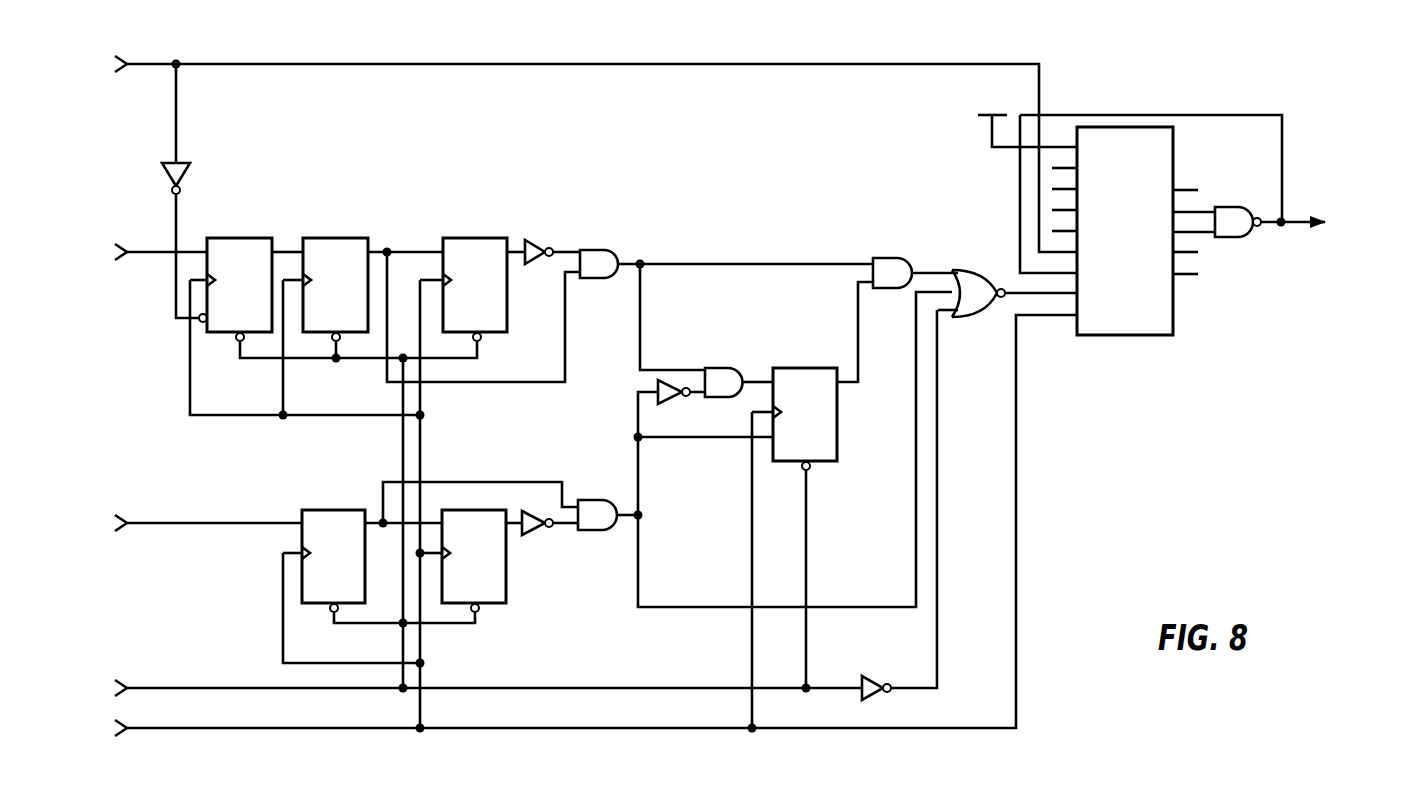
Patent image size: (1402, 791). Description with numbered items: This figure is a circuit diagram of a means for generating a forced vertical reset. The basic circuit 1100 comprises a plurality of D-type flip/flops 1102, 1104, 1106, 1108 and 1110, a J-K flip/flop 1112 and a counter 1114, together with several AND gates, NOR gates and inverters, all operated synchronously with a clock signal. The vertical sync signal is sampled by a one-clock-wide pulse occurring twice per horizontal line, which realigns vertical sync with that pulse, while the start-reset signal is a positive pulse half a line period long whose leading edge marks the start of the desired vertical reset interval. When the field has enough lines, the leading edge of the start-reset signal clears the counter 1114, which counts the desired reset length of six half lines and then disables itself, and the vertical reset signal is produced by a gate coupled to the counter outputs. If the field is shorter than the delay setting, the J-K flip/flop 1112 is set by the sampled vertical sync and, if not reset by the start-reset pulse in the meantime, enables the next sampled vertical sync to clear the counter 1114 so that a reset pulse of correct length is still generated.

The basic circuit 1100 is at (797, 211).
The D-type flip/flop 1102 is at (238, 238).
The D-type flip/flop 1104 is at (323, 238).
The D-type flip/flop 1106 is at (465, 238).
The D-type flip/flop 1108 is at (328, 510).
The D-type flip/flop 1110 is at (507, 572).
The J-K flip/flop 1112 is at (800, 368).
The counter 1114 is at (1133, 336).